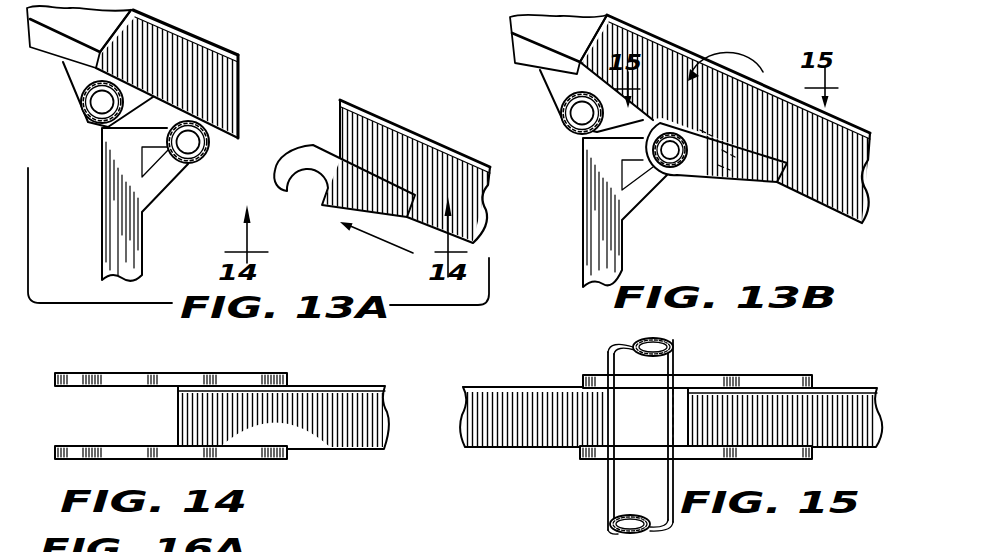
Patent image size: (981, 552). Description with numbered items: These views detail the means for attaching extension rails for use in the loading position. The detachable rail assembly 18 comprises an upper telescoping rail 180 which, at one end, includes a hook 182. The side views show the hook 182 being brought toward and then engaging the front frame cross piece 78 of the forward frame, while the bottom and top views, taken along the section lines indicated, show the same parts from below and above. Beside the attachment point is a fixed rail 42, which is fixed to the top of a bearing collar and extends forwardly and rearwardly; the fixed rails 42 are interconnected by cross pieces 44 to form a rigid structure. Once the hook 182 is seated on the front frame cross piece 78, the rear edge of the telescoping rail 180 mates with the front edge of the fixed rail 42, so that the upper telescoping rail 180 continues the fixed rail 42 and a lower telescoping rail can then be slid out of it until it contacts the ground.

In FIG. 13A, the detachable rail assembly 18 is at (392, 113).
In FIG. 13B, the fixed rail 42 is at (659, 51).
In FIG. 15, the fixed rail 42 is at (492, 392).
In FIG. 13A, the cross piece 44 is at (81, 110).
In FIG. 13B, the cross piece 44 is at (591, 102).
In FIG. 13A, the front frame cross piece 78 is at (207, 160).
In FIG. 13B, the front frame cross piece 78 is at (677, 168).
In FIG. 15, the front frame cross piece 78 is at (607, 484).
In FIG. 13A, the upper telescoping rail 180 is at (437, 160).
In FIG. 13B, the upper telescoping rail 180 is at (780, 100).
In FIG. 14, the upper telescoping rail 180 is at (340, 393).
In FIG. 15, the upper telescoping rail 180 is at (833, 395).
In FIG. 13A, the hook 182 is at (308, 145).
In FIG. 13B, the hook 182 is at (708, 178).
In FIG. 14, the hook 182 is at (105, 373).
In FIG. 15, the hook 182 is at (690, 380).